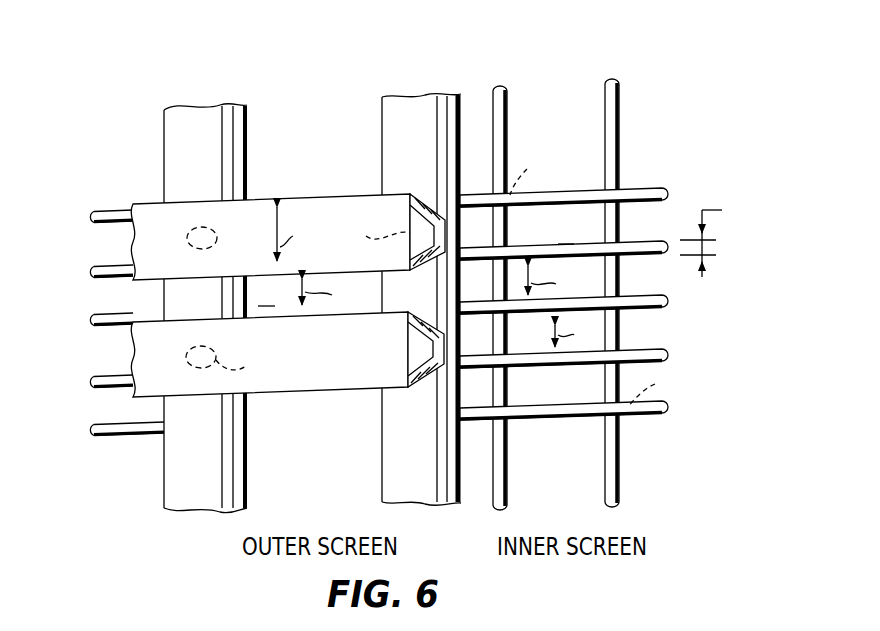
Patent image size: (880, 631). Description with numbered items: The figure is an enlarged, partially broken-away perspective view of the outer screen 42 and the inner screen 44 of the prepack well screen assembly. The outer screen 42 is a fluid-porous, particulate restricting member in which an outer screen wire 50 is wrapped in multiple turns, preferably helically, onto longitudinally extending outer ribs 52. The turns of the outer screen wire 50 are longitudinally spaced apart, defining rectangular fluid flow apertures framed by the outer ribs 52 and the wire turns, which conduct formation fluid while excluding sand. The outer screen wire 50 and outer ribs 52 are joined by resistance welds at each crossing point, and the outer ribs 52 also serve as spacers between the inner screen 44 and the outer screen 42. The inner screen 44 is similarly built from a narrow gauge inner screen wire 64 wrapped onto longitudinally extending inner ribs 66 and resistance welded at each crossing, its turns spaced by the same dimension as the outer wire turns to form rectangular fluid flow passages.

The outer screen 42 is at (125, 157).
The inner screen 44 is at (684, 61).
The outer screen wire 50 is at (315, 198).
The outer ribs 52 is at (401, 127).
The inner screen wire 64 is at (657, 194).
The inner ribs 66 is at (620, 113).